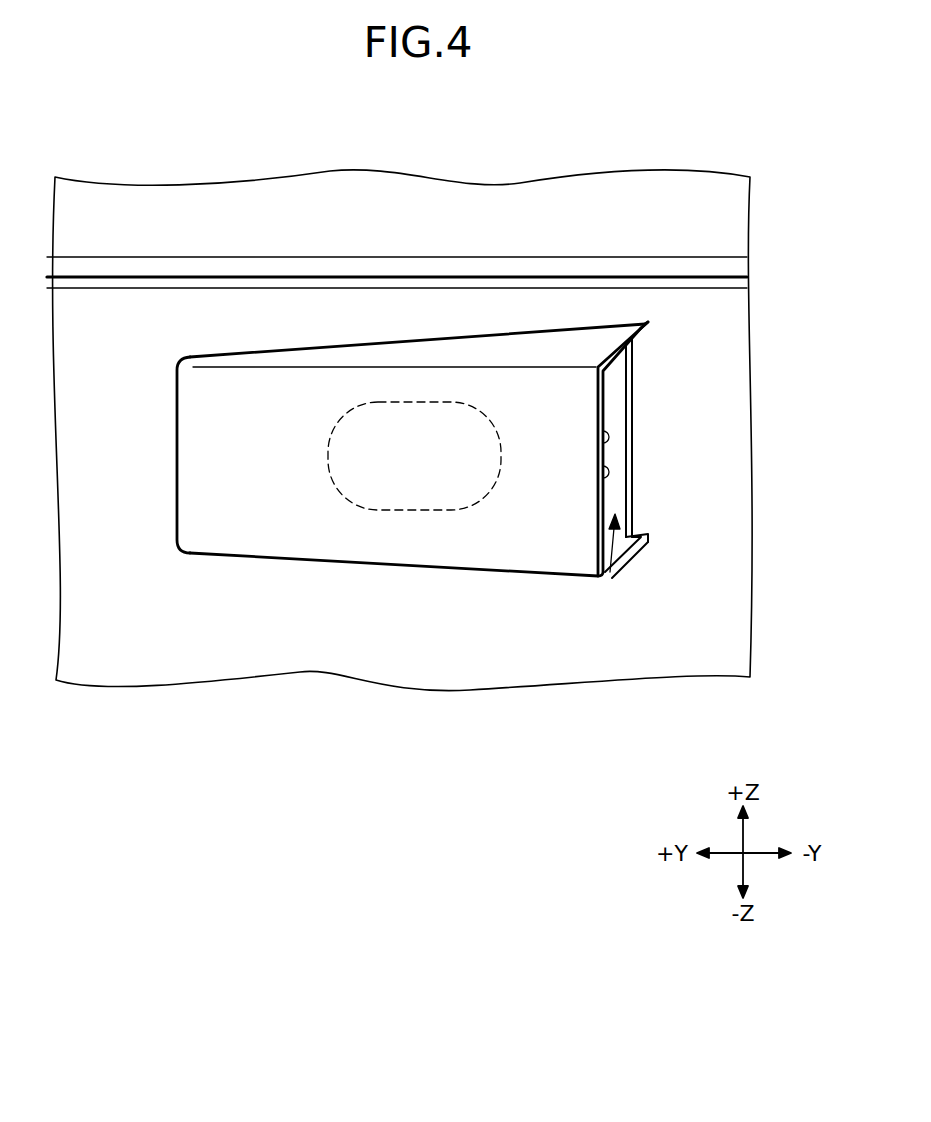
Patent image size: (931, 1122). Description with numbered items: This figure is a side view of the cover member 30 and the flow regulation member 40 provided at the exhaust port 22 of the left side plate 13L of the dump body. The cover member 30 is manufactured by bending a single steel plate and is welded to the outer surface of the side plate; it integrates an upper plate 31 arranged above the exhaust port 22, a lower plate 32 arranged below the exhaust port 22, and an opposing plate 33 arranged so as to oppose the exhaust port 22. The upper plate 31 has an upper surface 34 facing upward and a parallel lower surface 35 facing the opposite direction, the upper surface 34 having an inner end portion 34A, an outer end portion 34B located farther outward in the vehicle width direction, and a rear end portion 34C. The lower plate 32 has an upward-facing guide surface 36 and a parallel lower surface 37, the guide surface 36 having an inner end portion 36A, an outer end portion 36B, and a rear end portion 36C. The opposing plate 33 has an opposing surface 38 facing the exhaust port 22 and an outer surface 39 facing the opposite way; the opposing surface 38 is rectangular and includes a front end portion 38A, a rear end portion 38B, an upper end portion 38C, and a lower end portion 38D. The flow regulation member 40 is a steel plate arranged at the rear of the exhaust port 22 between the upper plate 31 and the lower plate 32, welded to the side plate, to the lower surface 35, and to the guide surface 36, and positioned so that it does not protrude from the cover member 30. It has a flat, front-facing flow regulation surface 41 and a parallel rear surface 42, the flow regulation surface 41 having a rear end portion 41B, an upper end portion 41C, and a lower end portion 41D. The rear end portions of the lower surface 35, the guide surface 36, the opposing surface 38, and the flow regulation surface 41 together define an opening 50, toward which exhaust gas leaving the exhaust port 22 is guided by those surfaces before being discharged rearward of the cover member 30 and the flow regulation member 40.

The left side plate 13L is at (245, 300).
The exhaust port 22 is at (360, 408).
The cover member 30 is at (468, 340).
The upper plate 31 is at (551, 347).
The lower plate 32 is at (620, 576).
The opposing plate 33 is at (515, 527).
The upper surface 34 is at (517, 347).
The inner end portion 34A is at (428, 335).
The outer end portion 34B is at (505, 362).
The rear end portion 34C is at (617, 362).
The lower surface 35 is at (632, 367).
The guide surface 36 is at (618, 557).
The inner end portion 36A is at (641, 535).
The outer end portion 36B is at (607, 578).
The rear end portion 36C is at (638, 541).
The lower surface 37 is at (620, 563).
The opposing surface 38 is at (598, 442).
The front end portion 38A is at (177, 458).
The rear end portion 38B is at (598, 478).
The upper end portion 38C is at (610, 368).
The lower end portion 38D is at (602, 578).
The outer surface 39 is at (475, 533).
The flow regulation member 40 is at (613, 450).
The flow regulation surface 41 is at (612, 404).
The rear end portion 41B is at (634, 481).
The upper end portion 41C is at (641, 325).
The lower end portion 41D is at (627, 555).
The rear surface 42 is at (634, 429).
The opening 50 is at (612, 580).